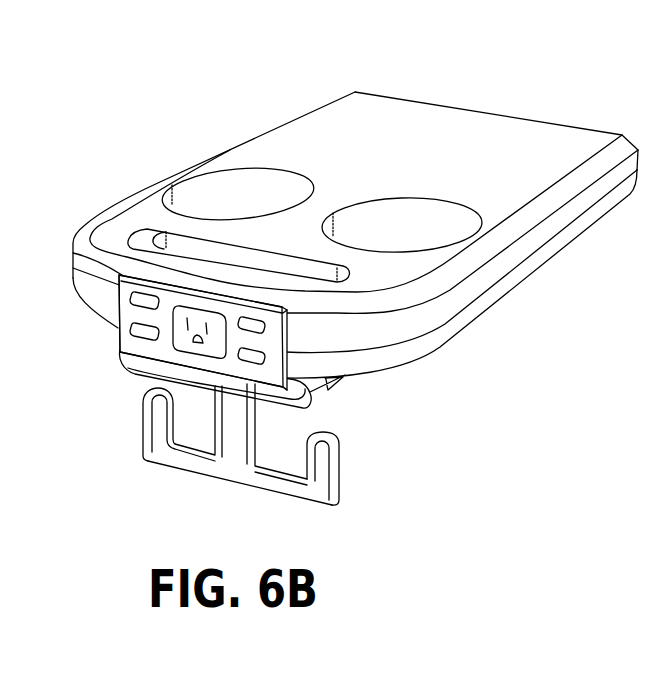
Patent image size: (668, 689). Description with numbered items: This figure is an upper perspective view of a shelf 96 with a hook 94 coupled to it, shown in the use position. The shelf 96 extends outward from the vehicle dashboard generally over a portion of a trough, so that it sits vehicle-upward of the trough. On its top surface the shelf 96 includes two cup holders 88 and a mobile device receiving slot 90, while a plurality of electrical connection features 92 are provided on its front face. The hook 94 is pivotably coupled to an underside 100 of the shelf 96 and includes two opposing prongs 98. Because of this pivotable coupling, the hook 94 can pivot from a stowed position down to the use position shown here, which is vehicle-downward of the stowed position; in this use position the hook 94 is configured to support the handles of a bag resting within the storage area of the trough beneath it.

The cup holders 88 is at (375, 213).
The mobile device receiving slot 90 is at (150, 238).
The electrical connection features 92 is at (182, 337).
The hook 94 is at (218, 480).
The shelf 96 is at (432, 133).
The prongs 98 is at (155, 413).
The underside 100 is at (410, 365).